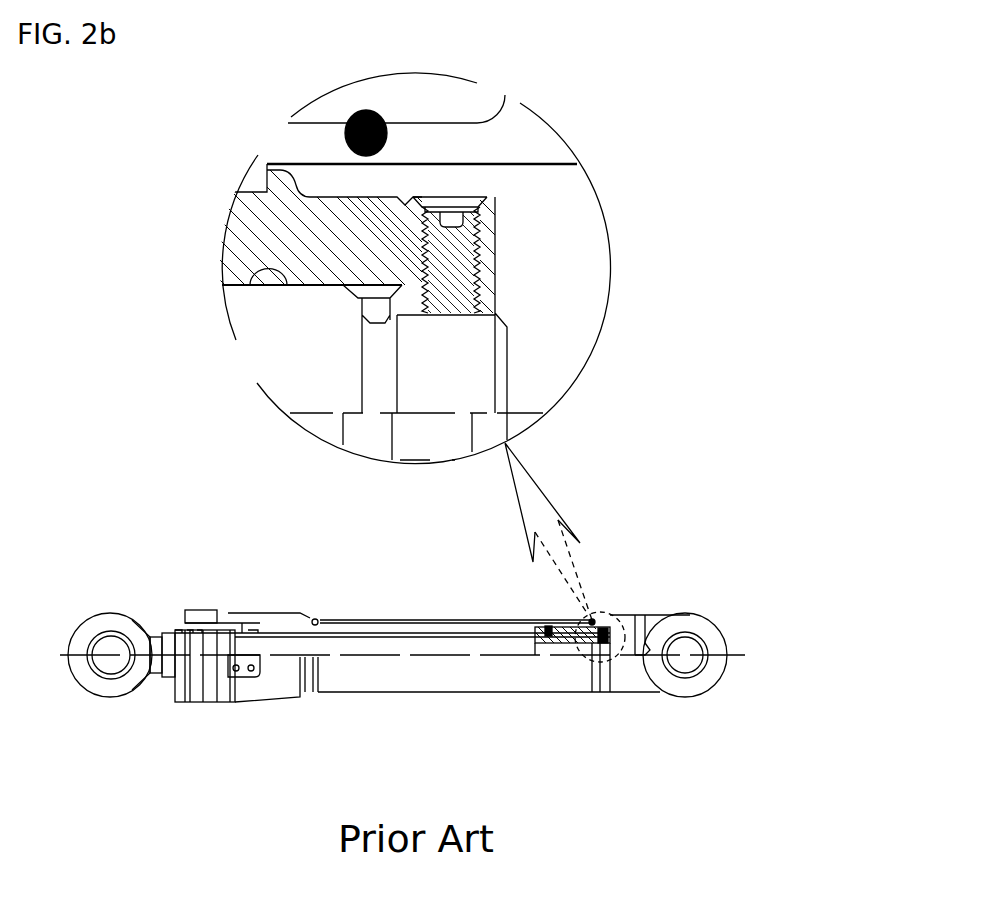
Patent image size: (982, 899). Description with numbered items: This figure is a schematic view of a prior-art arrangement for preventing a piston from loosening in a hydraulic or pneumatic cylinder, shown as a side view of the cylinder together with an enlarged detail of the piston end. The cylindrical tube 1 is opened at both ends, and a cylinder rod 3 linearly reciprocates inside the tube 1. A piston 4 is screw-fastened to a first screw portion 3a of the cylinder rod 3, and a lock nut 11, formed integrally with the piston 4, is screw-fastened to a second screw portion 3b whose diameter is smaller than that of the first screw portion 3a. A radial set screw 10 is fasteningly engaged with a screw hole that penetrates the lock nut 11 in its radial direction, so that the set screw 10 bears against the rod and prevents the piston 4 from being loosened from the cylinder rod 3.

The cylindrical tube 1 is at (443, 622).
The cylinder rod 3 is at (300, 372).
The first screw portion 3a is at (250, 285).
The second screw portion 3b is at (493, 298).
The piston 4 is at (280, 233).
The radial set screw 10 is at (447, 262).
The lock nut 11 is at (488, 225).